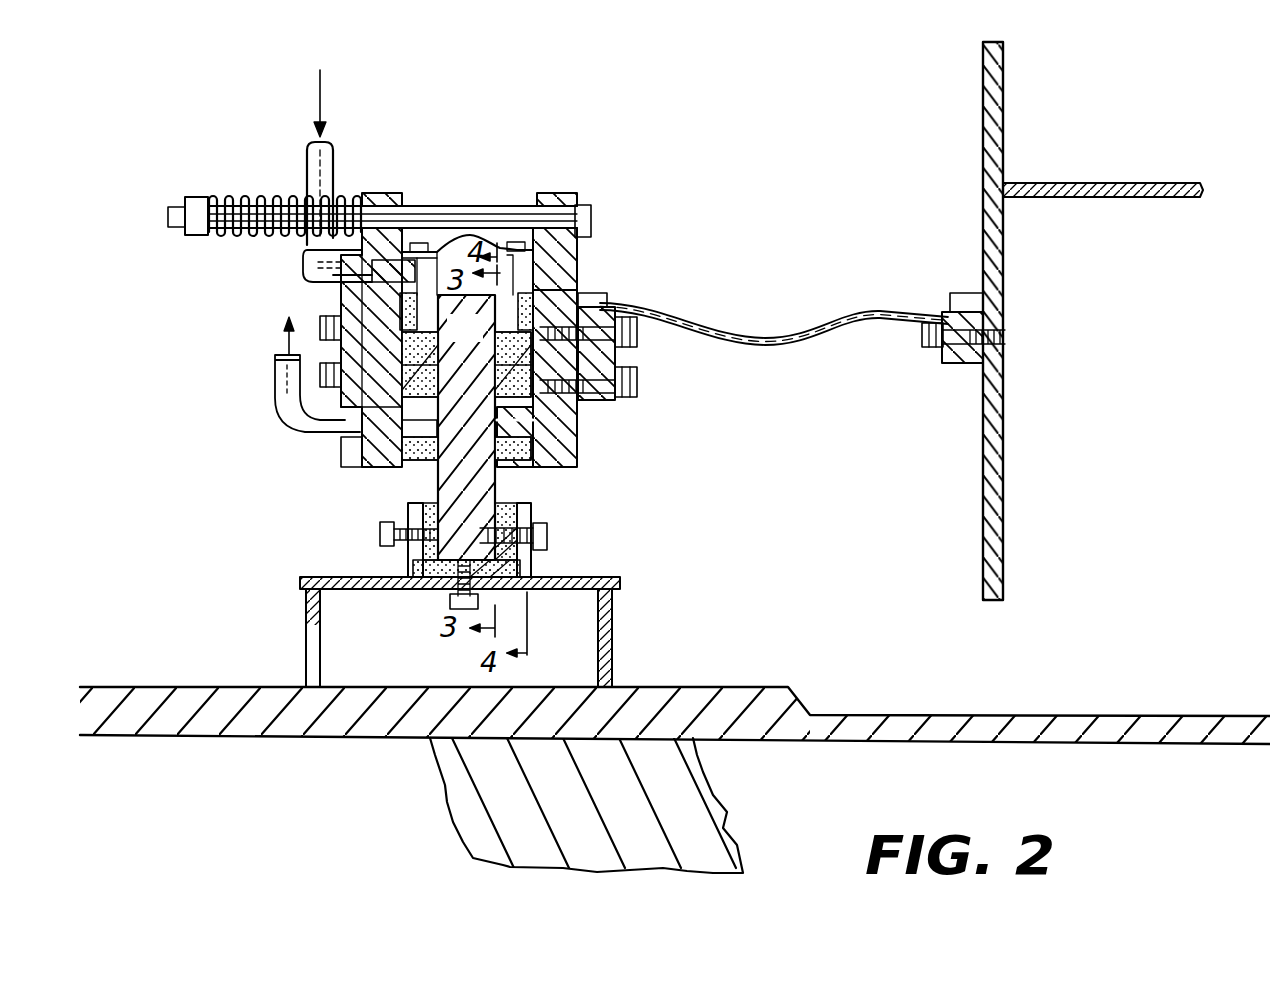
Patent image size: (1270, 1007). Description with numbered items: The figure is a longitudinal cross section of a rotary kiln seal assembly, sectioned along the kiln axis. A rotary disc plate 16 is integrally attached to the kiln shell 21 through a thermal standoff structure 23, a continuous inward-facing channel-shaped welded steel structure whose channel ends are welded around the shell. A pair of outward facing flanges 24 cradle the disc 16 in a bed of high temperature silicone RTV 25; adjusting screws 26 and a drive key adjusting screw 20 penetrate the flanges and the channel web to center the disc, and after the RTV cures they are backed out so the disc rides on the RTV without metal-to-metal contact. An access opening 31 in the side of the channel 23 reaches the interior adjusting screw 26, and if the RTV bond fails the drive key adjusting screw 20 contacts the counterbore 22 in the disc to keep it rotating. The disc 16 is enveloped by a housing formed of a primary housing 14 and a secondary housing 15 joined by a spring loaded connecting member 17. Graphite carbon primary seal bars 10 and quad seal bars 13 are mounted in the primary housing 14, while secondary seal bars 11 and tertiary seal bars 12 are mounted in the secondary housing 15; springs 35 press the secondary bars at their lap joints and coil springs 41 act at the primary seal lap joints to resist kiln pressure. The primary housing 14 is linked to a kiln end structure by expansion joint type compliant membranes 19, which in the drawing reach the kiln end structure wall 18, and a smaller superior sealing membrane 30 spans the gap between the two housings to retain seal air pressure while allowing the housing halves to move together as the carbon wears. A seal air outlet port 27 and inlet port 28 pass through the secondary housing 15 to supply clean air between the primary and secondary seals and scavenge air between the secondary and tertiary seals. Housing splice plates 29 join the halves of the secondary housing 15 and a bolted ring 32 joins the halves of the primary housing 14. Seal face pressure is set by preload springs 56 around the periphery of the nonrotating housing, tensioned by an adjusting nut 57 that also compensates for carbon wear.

The primary seal bars 10 is at (566, 300).
The secondary seal bars 11 is at (405, 386).
The tertiary seal bars 12 is at (372, 470).
The quad seal bars 13 is at (532, 445).
The primary housing 14 is at (590, 228).
The secondary housing 15 is at (367, 242).
The rotary disc plate 16 is at (466, 436).
The spring loaded connecting member 17 is at (490, 197).
The wall 18 is at (1005, 150).
The compliant membranes 19 is at (866, 306).
The drive key adjusting screw 20 is at (548, 536).
The kiln shell 21 is at (803, 702).
The counterbore 22 is at (500, 505).
The thermal standoff structure 23 is at (612, 636).
The outward facing flanges 24 is at (408, 566).
The high temperature silicone RTV 25 is at (412, 508).
The adjusting screws 26 is at (380, 533).
The outlet port 27 is at (403, 250).
The inlet port 28 is at (388, 415).
The housing splice plates 29 is at (345, 462).
The superior sealing membrane 30 is at (450, 236).
The access opening 31 is at (306, 632).
The bolted ring 32 is at (624, 355).
The springs 35 is at (398, 318).
The coil springs 41 is at (565, 285).
The preload springs 56 is at (270, 205).
The adjusting nut 57 is at (190, 233).